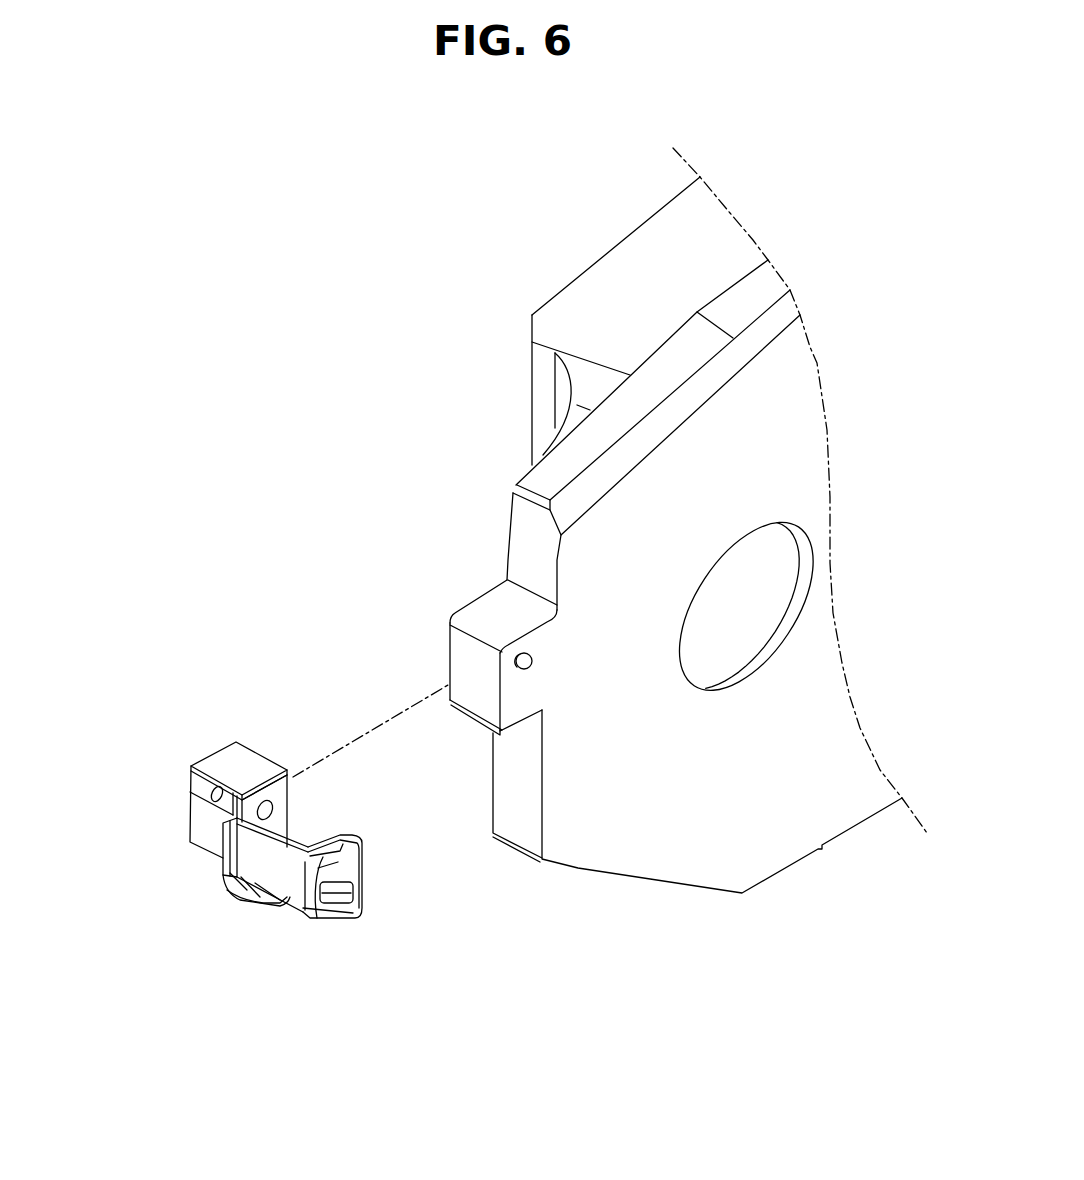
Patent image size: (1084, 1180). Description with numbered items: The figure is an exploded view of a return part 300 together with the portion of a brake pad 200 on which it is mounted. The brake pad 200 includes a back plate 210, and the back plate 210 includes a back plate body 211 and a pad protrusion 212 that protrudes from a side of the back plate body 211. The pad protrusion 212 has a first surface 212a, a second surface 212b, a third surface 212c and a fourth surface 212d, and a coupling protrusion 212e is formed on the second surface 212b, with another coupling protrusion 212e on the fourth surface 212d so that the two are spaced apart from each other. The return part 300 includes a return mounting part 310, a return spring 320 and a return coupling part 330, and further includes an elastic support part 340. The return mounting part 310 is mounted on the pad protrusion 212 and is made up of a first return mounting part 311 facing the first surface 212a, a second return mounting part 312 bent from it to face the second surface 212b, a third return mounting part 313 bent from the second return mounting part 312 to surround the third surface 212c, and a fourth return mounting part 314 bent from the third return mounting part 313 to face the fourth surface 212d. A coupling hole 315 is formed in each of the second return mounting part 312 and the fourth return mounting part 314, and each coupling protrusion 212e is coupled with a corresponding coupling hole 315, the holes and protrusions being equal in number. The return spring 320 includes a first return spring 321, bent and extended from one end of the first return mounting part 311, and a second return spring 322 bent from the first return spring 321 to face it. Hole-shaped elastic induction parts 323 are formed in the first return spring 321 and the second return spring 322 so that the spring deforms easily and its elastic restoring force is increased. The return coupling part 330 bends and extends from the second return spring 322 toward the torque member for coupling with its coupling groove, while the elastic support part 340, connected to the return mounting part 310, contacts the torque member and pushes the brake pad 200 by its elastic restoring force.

The brake pad 200 is at (583, 344).
The back plate 210 is at (626, 574).
The back plate body 211 is at (645, 513).
The pad protrusion 212 is at (560, 730).
The first surface 212a is at (480, 698).
The second surface 212b is at (452, 658).
The third surface 212c is at (490, 613).
The fourth surface 212d is at (523, 697).
The coupling protrusion 212e is at (532, 660).
The return part 300 is at (281, 850).
The return mounting part 310 is at (227, 791).
The first return mounting part 311 is at (210, 827).
The second return mounting part 312 is at (198, 785).
The third return mounting part 313 is at (230, 760).
The fourth return mounting part 314 is at (282, 798).
The coupling hole 315 is at (227, 797).
The return spring 320 is at (356, 926).
The first return spring 321 is at (370, 842).
The second return spring 322 is at (345, 895).
The elastic induction part 323 is at (338, 858).
The return coupling part 330 is at (227, 883).
The elastic support part 340 is at (263, 903).